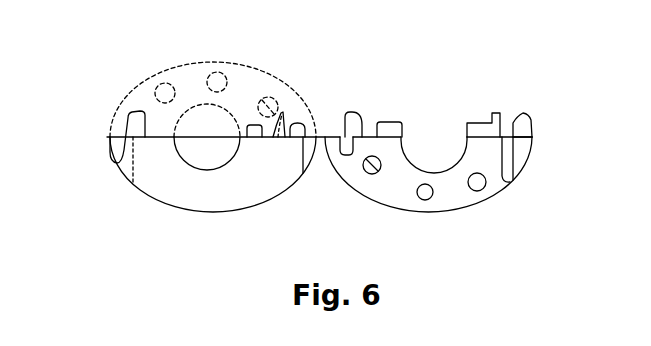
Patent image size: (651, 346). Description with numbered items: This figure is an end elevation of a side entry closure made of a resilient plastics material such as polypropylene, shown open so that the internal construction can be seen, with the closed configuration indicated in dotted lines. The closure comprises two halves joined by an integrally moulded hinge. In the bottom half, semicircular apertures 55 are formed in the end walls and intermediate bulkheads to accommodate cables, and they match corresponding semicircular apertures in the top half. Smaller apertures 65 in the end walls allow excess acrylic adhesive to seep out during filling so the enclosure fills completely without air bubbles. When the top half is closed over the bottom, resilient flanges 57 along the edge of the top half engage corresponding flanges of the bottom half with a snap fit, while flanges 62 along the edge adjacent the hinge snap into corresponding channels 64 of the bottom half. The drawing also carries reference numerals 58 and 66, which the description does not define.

The semicircular aperture 55 is at (433, 143).
The resilient flange 57 is at (527, 127).
The hook 58 is at (133, 150).
The flange 62 is at (353, 112).
The channel 64 is at (288, 118).
The smaller aperture 65 is at (425, 200).
The central opening 66 is at (210, 153).